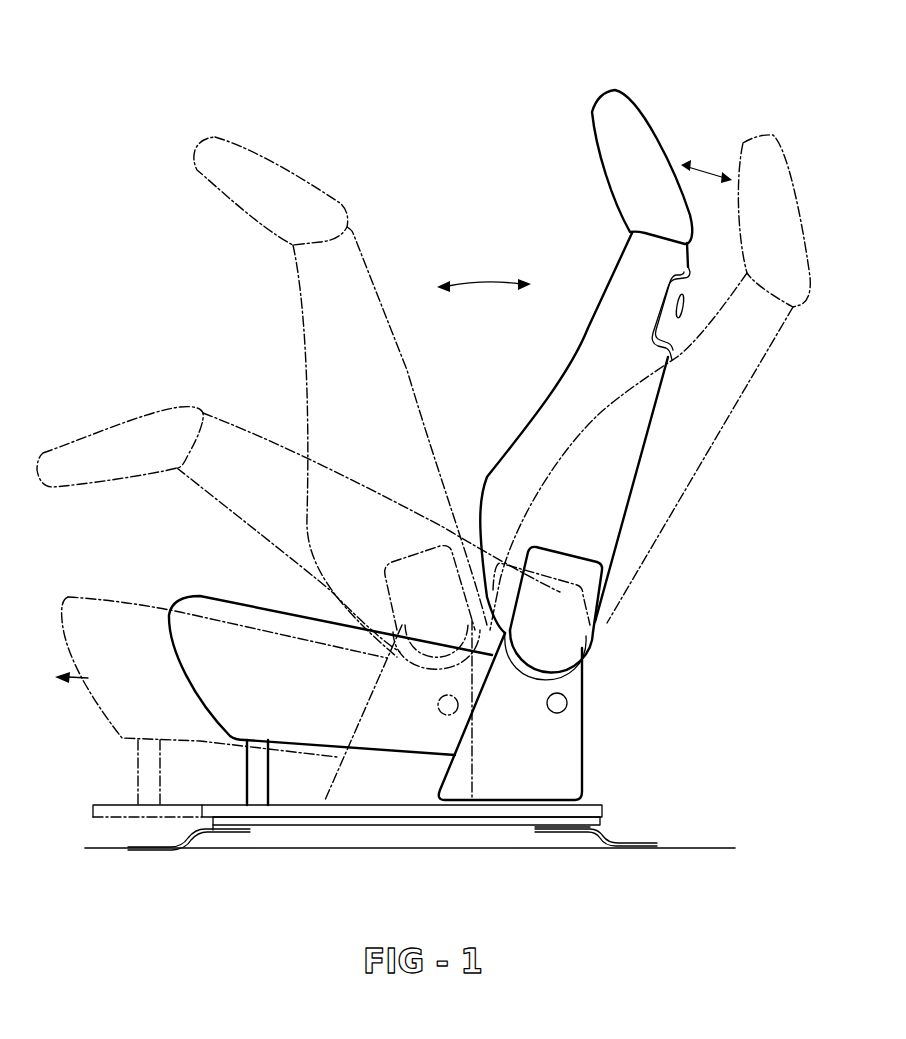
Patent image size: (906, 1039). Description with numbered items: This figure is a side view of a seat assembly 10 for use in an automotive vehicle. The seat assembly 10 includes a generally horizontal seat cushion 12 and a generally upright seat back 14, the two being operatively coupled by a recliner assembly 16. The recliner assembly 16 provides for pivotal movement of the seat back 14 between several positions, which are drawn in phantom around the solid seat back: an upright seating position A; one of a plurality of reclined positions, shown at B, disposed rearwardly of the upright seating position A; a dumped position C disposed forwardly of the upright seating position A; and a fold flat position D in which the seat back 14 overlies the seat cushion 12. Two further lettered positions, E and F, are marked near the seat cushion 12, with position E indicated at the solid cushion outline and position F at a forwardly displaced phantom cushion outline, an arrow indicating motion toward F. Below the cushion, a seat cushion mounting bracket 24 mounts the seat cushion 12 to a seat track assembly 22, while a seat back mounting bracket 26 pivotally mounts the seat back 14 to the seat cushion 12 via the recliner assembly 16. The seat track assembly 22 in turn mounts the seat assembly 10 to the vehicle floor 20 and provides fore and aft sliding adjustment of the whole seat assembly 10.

The seat assembly 10 is at (283, 332).
The seat cushion 12 is at (280, 607).
The seat back 14 is at (620, 257).
The recliner assembly 16 is at (577, 622).
The vehicle floor 20 is at (693, 845).
The seat track assembly 22 is at (603, 805).
The seat cushion mounting bracket 24 is at (537, 770).
The seat back mounting bracket 26 is at (564, 620).
The upright seating position A is at (613, 90).
The reclined position B is at (765, 135).
The dumped position C is at (215, 137).
The fold flat position D is at (58, 440).
The seat cushion design position E is at (202, 595).
The seat cushion forward position F is at (68, 597).